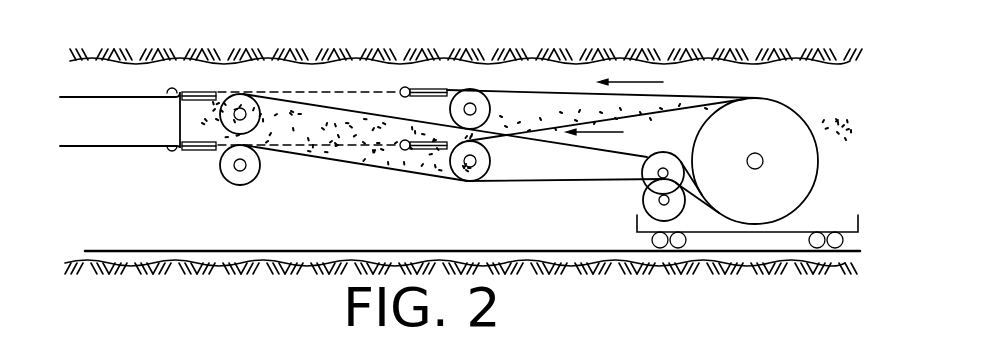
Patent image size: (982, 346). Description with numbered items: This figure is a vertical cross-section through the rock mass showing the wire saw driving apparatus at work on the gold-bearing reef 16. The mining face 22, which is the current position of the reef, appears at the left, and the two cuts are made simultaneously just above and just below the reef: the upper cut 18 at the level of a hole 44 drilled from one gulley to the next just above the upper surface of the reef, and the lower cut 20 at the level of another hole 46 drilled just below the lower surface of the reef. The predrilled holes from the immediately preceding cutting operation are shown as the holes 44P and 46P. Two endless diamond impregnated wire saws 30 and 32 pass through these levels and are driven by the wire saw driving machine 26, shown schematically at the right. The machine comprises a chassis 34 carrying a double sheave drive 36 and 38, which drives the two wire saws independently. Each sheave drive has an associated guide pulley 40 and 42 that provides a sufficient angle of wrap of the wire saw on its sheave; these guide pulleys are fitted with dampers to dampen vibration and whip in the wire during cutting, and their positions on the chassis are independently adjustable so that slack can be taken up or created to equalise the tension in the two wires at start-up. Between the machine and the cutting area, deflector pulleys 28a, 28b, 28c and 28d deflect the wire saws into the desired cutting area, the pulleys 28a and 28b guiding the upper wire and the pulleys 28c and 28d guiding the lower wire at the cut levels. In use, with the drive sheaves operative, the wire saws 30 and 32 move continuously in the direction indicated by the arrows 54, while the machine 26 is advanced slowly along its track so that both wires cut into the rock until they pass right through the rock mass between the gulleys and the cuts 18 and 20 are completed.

The gold-bearing reef 16 is at (308, 128).
The upper cut 18 is at (315, 91).
The lower cut 20 is at (352, 148).
The mining face 22 is at (165, 127).
The wire saw driving machine 26 is at (812, 121).
The deflector pulley 28a is at (460, 85).
The deflector pulley 28b is at (201, 77).
The deflector pulley 28c is at (468, 188).
The deflector pulley 28d is at (202, 160).
The wire saw 30 is at (373, 113).
The wire saw 32 is at (571, 181).
The chassis 34 is at (812, 228).
The sheave drive 36 is at (761, 143).
The sheave drive 38 is at (765, 118).
The guide pulley 40 is at (643, 196).
The guide pulley 42 is at (672, 165).
The hole 44 is at (406, 88).
The predrilled hole 44P is at (171, 90).
The hole 46 is at (407, 151).
The predrilled hole 46P is at (176, 147).
The arrows 54 is at (663, 82).